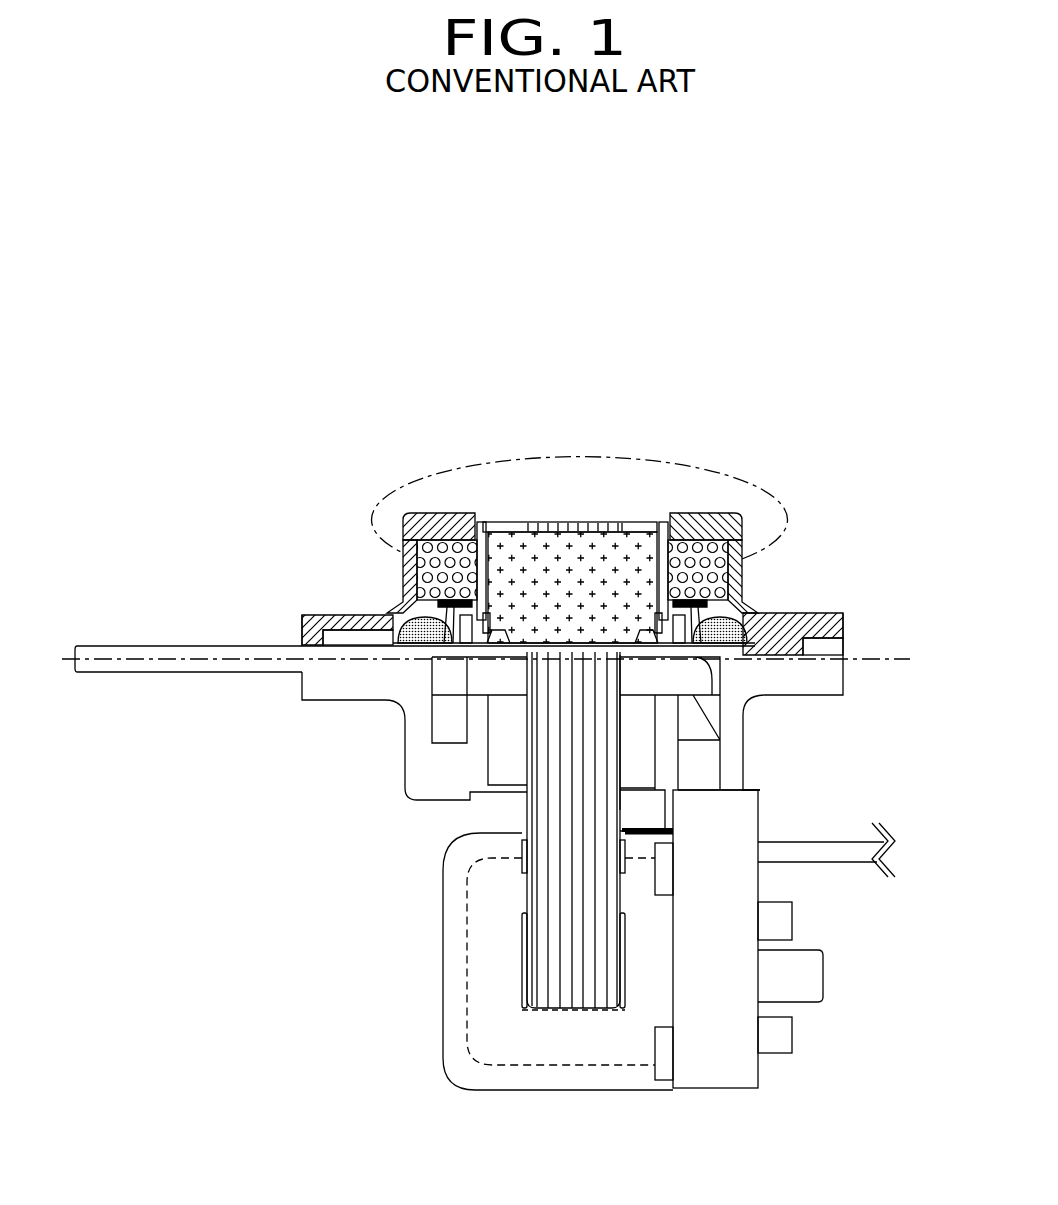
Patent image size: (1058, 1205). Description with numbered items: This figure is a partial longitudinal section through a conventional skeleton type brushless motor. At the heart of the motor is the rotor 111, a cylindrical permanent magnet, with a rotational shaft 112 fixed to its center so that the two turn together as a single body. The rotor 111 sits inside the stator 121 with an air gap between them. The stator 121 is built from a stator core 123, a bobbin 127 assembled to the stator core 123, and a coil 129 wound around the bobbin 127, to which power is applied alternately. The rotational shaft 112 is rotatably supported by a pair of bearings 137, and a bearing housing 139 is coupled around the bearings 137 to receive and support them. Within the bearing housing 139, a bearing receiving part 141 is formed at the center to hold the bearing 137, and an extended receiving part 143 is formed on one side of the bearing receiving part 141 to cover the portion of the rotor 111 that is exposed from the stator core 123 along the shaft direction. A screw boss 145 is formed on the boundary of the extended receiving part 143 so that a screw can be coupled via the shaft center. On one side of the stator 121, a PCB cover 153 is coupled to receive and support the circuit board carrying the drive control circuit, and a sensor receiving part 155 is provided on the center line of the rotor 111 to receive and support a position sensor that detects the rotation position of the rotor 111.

The rotor 111 is at (643, 553).
The rotational shaft 112 is at (132, 673).
The stator 121 is at (480, 871).
The stator core 123 is at (542, 887).
The bobbin 127 is at (450, 970).
The coil 129 is at (467, 933).
The bearing 137 is at (372, 613).
The bearing housing 139 is at (502, 393).
The bearing receiving part 141 is at (443, 530).
The extended receiving part 143 is at (504, 532).
The screw boss 145 is at (488, 675).
The PCB cover 153 is at (740, 1070).
The sensor receiving part 155 is at (650, 823).